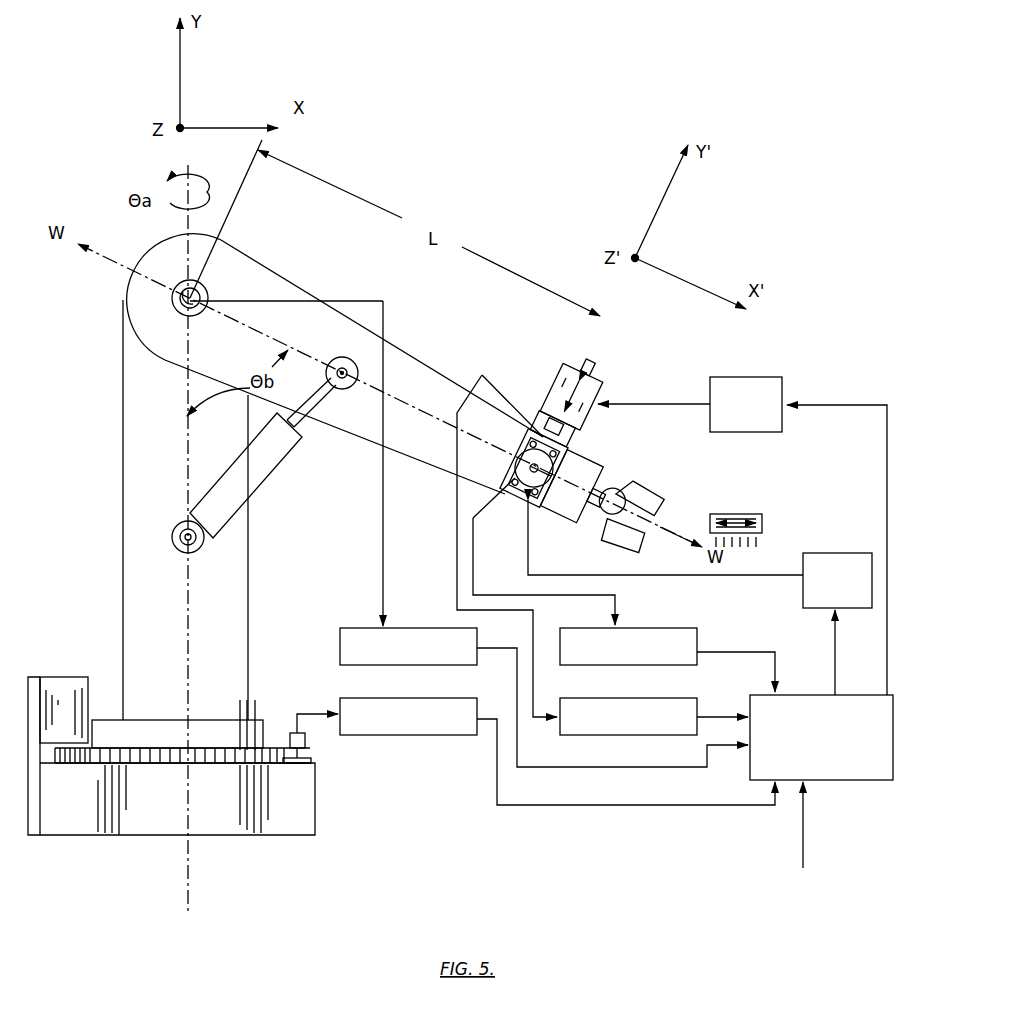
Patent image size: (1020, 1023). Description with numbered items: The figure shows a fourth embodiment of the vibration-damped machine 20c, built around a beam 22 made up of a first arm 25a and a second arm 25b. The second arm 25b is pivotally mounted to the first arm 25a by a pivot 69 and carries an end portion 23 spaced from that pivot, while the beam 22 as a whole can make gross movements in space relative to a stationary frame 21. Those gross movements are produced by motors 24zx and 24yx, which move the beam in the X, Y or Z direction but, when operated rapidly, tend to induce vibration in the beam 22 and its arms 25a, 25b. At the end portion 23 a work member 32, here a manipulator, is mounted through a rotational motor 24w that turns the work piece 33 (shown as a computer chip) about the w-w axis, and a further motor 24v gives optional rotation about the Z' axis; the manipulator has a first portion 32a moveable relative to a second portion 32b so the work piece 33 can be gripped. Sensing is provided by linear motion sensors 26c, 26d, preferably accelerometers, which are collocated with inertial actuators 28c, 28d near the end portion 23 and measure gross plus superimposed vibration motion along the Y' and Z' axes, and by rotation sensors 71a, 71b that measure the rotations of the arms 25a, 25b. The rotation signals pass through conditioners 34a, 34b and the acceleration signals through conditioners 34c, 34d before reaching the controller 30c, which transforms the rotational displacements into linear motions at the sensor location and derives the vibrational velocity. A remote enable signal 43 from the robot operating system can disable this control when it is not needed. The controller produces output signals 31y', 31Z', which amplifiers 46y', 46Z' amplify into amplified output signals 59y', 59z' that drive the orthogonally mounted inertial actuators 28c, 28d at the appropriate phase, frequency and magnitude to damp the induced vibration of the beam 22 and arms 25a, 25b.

The vibration-damped machine 20c is at (470, 792).
The stationary frame 21 is at (318, 800).
The beam 22 is at (417, 350).
The end portion 23 is at (583, 442).
The motor 24v is at (612, 512).
The rotational motor 24w is at (606, 465).
The motor 24yx is at (258, 482).
The motor 24zx is at (60, 690).
The first arm 25a is at (133, 440).
The second arm 25b is at (300, 284).
The linear motion sensor 26c is at (620, 292).
The linear motion sensor 26d is at (538, 432).
The inertial actuator 28c is at (598, 380).
The inertial actuator 28d is at (515, 490).
The controller 30c is at (828, 786).
The output signal 31y' is at (837, 550).
The output signal 31Z' is at (803, 652).
The work member 32 is at (663, 508).
The first portion 32a is at (656, 500).
The second portion 32b is at (628, 543).
The work piece 33 is at (750, 514).
The conditioner 34a is at (380, 736).
The conditioner 34b is at (350, 628).
The conditioner 34c is at (628, 698).
The conditioner 34d is at (655, 628).
The remote enable signal 43 is at (806, 845).
The amplifier 46y' is at (762, 391).
The amplifier 46Z' is at (835, 566).
The amplified output signal 59y' is at (654, 389).
The amplified output signal 59z' is at (665, 554).
The pivot 69 is at (125, 308).
The rotation sensor 71a is at (308, 750).
The rotation sensor 71b is at (202, 290).